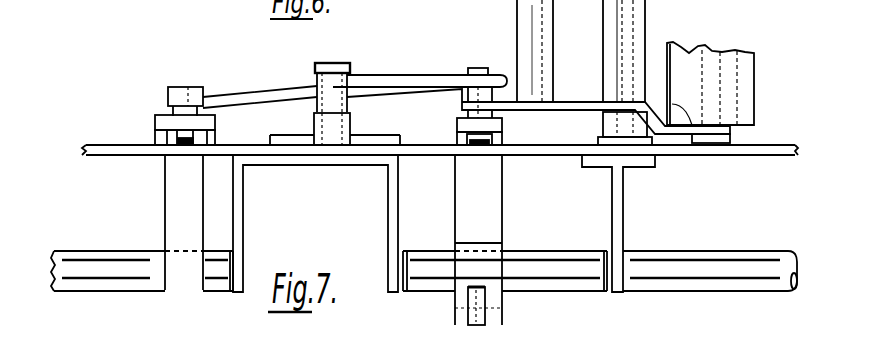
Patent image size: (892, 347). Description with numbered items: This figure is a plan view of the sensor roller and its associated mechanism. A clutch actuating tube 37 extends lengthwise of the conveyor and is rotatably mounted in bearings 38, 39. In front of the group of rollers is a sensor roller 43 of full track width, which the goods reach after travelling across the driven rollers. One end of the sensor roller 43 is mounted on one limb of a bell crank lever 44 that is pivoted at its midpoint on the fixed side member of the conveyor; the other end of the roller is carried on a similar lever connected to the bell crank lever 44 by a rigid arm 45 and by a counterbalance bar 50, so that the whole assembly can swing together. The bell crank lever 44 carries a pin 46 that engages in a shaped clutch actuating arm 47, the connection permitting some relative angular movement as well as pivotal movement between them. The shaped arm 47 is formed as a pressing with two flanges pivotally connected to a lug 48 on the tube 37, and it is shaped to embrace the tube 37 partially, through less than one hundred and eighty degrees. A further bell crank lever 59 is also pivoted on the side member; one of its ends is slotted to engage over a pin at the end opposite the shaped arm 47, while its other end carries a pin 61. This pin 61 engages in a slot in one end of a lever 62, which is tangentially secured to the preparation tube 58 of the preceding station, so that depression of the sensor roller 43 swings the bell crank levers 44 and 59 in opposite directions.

The clutch actuating tube 37 is at (542, 273).
The bearing 38 is at (395, 193).
The bearing 39 is at (617, 208).
The sensor roller 43 is at (690, 57).
The bell crank lever 44 is at (575, 103).
The rigid arm 45 is at (642, 8).
The pin 46 is at (477, 68).
The clutch actuating arm 47 is at (487, 193).
The lug 48 is at (478, 321).
The counterbalance bar 50 is at (515, 2).
The preparation tube 58 is at (725, 260).
The bell crank lever 59 is at (403, 82).
The pin 61 is at (182, 113).
The lever 62 is at (173, 183).